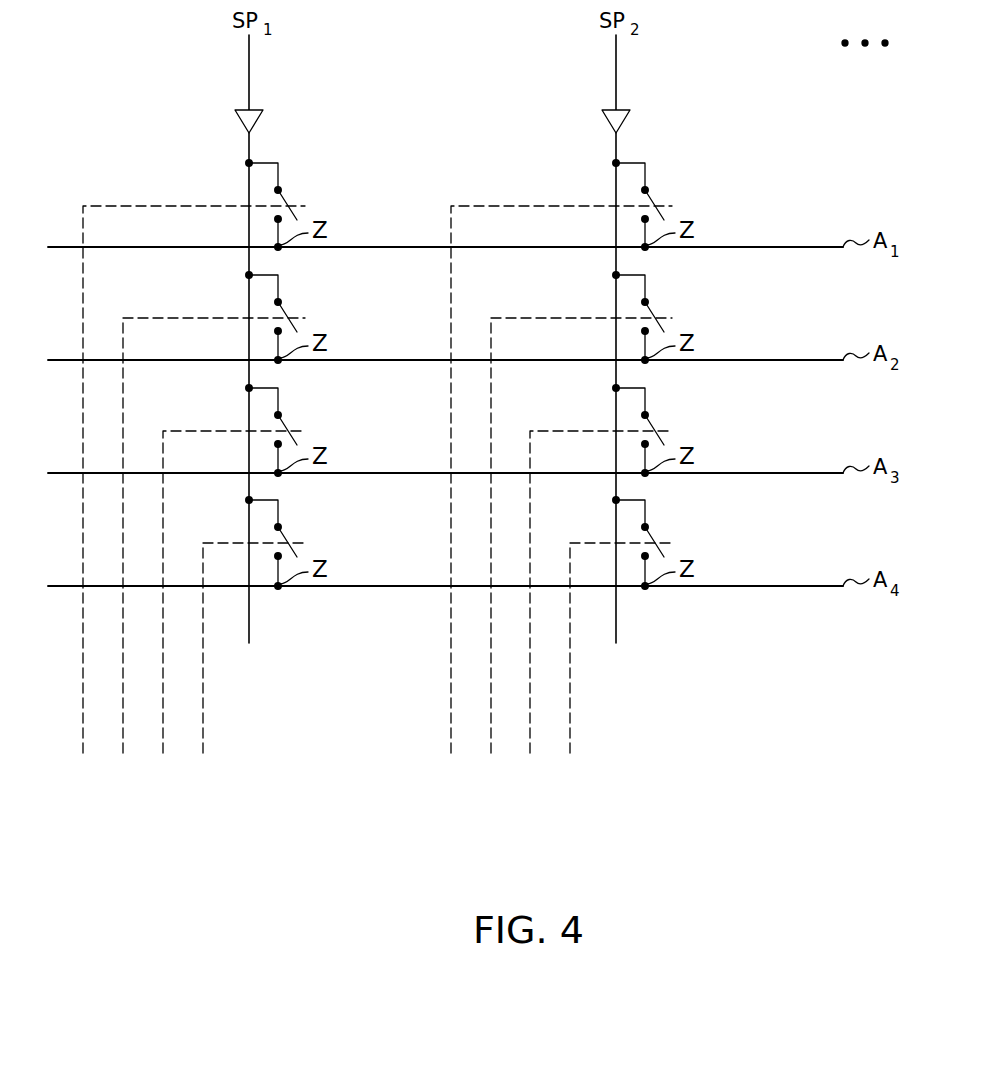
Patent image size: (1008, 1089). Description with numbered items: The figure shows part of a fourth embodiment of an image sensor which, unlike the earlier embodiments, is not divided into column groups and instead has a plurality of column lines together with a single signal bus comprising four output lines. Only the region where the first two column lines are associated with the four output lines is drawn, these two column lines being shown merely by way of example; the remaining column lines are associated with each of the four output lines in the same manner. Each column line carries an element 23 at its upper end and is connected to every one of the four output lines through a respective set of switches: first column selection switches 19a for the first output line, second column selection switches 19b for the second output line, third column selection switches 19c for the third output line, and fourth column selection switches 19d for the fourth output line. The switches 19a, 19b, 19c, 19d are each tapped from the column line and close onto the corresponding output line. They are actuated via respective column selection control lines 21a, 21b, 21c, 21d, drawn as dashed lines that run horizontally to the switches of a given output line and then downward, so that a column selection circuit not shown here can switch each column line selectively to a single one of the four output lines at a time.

The amplifier 23 is at (238, 117).
The first column selection switches 19a is at (312, 193).
The second column selection switches 19b is at (313, 312).
The third column selection switches 19c is at (313, 425).
The fourth column selection switches 19d is at (313, 537).
The column selection control line 21a is at (83, 745).
The column selection control line 21b is at (122, 746).
The column selection control line 21c is at (165, 746).
The column selection control line 21d is at (205, 745).